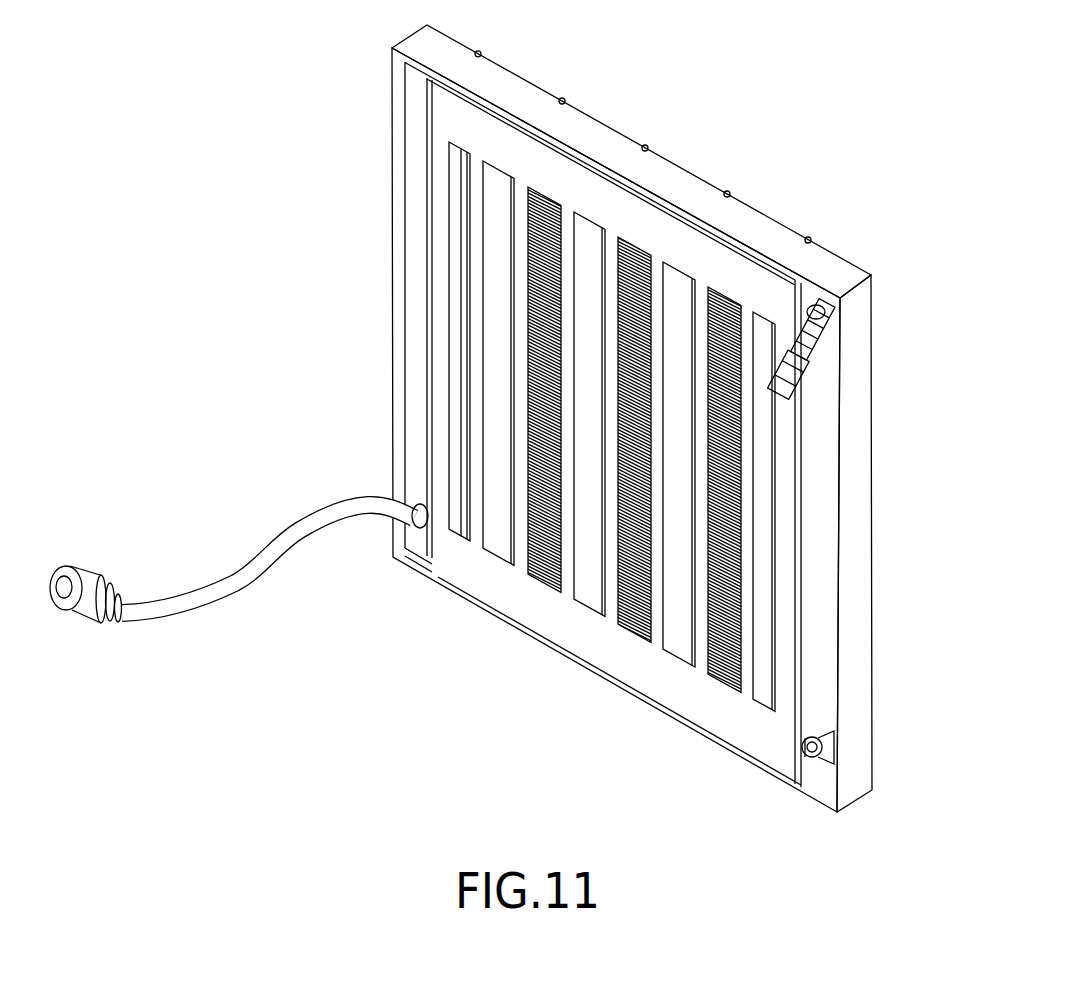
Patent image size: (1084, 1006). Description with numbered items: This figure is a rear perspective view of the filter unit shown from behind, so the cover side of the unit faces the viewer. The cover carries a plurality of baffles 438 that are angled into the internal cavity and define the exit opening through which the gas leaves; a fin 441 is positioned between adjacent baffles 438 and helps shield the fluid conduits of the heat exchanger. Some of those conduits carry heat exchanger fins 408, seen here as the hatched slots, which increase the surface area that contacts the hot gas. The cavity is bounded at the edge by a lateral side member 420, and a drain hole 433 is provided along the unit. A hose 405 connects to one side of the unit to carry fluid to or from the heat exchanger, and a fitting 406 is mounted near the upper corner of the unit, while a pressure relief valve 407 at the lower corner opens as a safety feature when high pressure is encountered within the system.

The lateral side member 420 is at (513, 83).
The heat exchanger fin 408 is at (632, 247).
The drain hole 433 is at (730, 196).
The connector fitting 406 is at (806, 373).
The hose 405 is at (245, 578).
The fin 441 is at (522, 547).
The baffle 438 is at (683, 630).
The pressure relief valve 407 is at (817, 762).